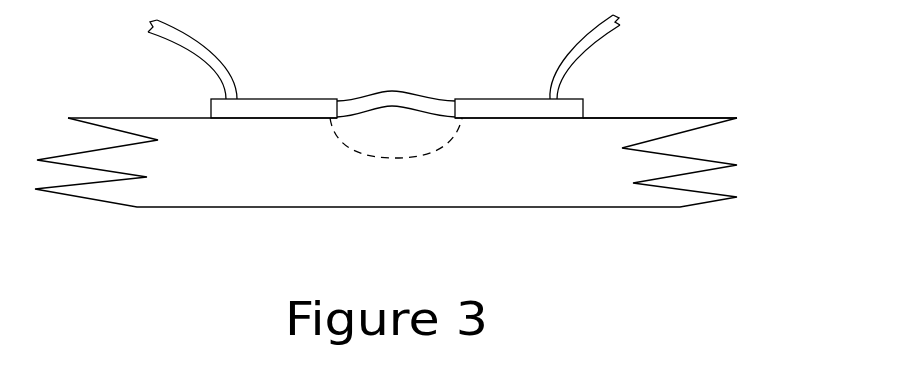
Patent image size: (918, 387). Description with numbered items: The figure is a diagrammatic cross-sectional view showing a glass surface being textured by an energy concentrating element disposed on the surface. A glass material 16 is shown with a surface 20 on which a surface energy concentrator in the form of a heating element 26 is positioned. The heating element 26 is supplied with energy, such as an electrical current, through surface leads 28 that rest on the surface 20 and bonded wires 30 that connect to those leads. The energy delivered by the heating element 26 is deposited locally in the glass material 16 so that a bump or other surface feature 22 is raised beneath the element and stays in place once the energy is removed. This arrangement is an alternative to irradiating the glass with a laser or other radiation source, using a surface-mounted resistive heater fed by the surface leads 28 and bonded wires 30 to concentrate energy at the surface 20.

The glass material 16 is at (277, 180).
The surface 20 is at (652, 117).
The surface feature 22 is at (452, 137).
The heating element 26 is at (397, 97).
The surface leads 28 is at (273, 112).
The bonded wires 30 is at (192, 45).